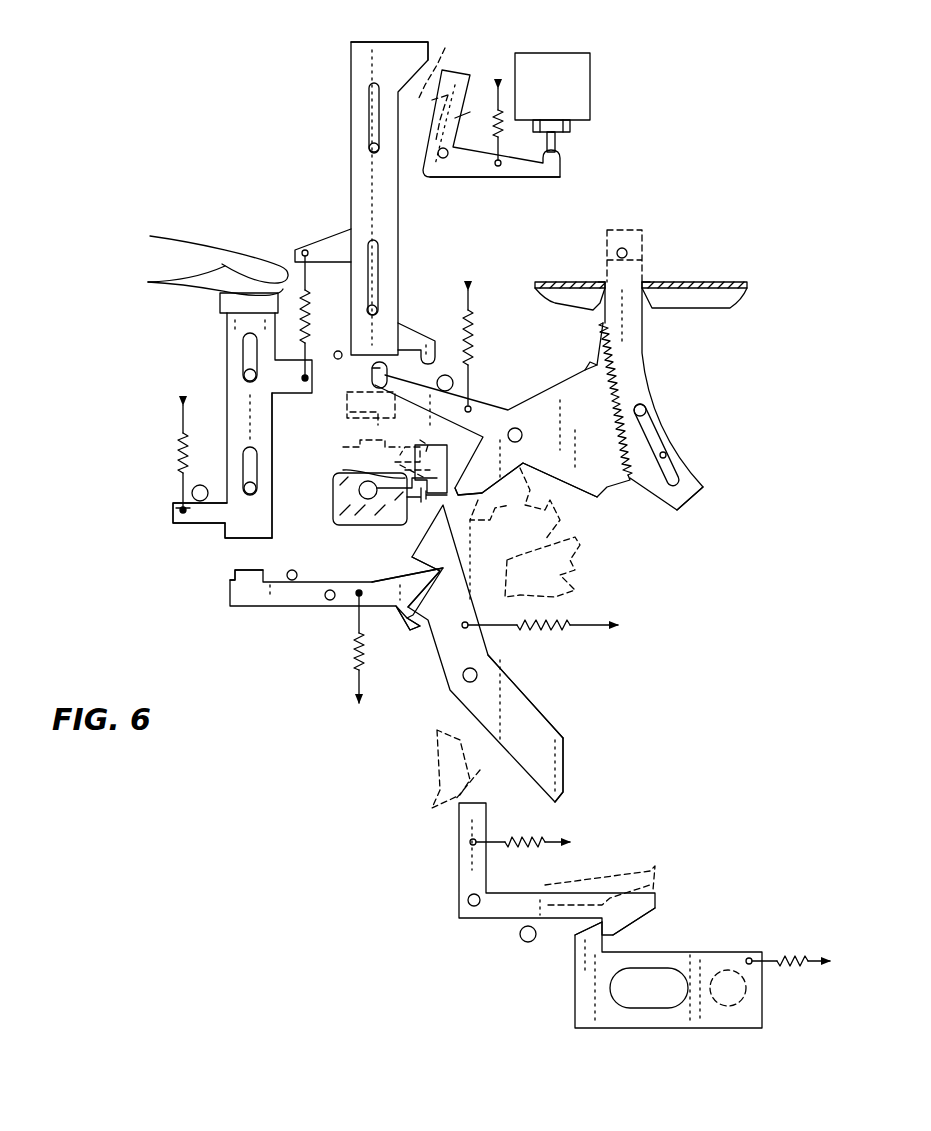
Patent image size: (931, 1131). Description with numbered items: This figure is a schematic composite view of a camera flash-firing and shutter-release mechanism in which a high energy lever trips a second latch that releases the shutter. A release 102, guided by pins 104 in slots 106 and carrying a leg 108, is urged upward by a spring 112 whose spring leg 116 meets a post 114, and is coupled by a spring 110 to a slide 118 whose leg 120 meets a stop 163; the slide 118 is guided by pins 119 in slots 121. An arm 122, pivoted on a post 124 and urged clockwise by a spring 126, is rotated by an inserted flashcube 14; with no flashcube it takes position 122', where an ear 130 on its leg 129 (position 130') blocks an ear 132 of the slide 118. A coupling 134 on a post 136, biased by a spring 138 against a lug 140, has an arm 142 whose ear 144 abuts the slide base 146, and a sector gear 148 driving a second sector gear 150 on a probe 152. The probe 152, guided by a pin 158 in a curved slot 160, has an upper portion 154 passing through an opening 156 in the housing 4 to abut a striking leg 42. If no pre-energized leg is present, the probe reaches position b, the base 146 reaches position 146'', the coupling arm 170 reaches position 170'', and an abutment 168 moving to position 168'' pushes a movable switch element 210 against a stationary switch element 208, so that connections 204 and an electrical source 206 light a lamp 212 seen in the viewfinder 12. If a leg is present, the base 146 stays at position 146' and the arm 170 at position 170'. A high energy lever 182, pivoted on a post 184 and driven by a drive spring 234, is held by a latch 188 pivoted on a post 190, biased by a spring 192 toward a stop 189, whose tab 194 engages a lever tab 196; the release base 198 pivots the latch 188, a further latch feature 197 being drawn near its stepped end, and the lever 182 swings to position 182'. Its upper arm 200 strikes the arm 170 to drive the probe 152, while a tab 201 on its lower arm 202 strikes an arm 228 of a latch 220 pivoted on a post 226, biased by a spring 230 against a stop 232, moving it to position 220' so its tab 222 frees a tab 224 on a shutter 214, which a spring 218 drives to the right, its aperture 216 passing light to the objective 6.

The housing 4 is at (705, 282).
The objective 6 is at (726, 970).
The viewfinder 12 is at (333, 482).
The flashcube 14 is at (580, 90).
The striking leg 42 is at (628, 253).
The release 102 is at (235, 390).
The pins 104 is at (244, 372).
The slots 106 is at (246, 342).
The leg 108 is at (275, 448).
The spring 110 is at (303, 262).
The spring 112 is at (178, 440).
The post 114 is at (200, 484).
The spring leg 116 is at (190, 515).
The slide 118 is at (363, 177).
The pins 119 is at (369, 148).
The leg 120 is at (312, 245).
The slots 121 is at (372, 86).
The arm 122 is at (495, 191).
The arm position 122' is at (426, 119).
The post 124 is at (444, 160).
The spring 126 is at (493, 108).
The leg 129 is at (458, 122).
The ear 130 is at (491, 105).
The ear position 130' is at (440, 82).
The ear 132 is at (412, 50).
The coupling 134 is at (543, 385).
The post 136 is at (515, 427).
The spring 138 is at (473, 340).
The lug 140 is at (447, 375).
The arm 142 is at (405, 395).
The ear 144 is at (372, 380).
The base 146 is at (347, 368).
The slide base position 146' is at (341, 411).
The slide base position 146'' is at (351, 436).
The sector gear 148 is at (598, 350).
The second sector gear 150 is at (663, 492).
The probe 152 is at (640, 357).
The upper portion 154 is at (603, 280).
The opening 156 is at (645, 280).
The pin 158 is at (646, 408).
The curved slot 160 is at (666, 455).
The stop 163 is at (337, 350).
The abutment 168 is at (419, 333).
The abutment position 168'' is at (396, 437).
The arm 170 is at (524, 495).
The arm position 170' is at (490, 522).
The arm position 170'' is at (536, 504).
The high energy lever 182 is at (494, 653).
The released position 182' is at (500, 672).
The post 184 is at (478, 673).
The latch 188 is at (262, 597).
The stop 189 is at (292, 570).
The post 190 is at (331, 590).
The spring 192 is at (352, 650).
The tab 194 is at (420, 575).
The tab 196 is at (418, 630).
The step 197 is at (230, 586).
The base 198 is at (272, 538).
The upper arm 200 is at (480, 605).
The tab 201 is at (563, 780).
The lower arm 202 is at (540, 725).
The connections 204 is at (452, 470).
The electrical source 206 is at (423, 505).
The switch element 208 is at (372, 464).
The switch element 210 is at (401, 462).
The electrical lamp 212 is at (359, 496).
The shutter 214 is at (695, 1030).
The aperture 216 is at (645, 1005).
The spring 218 is at (778, 955).
The latch 220 is at (533, 879).
The latch position 220' is at (600, 867).
The tab 222 is at (628, 926).
The tab 224 is at (580, 940).
The post 226 is at (468, 900).
The arm 228 is at (470, 830).
The spring 230 is at (525, 840).
The stop 232 is at (523, 940).
The drive spring 234 is at (572, 622).